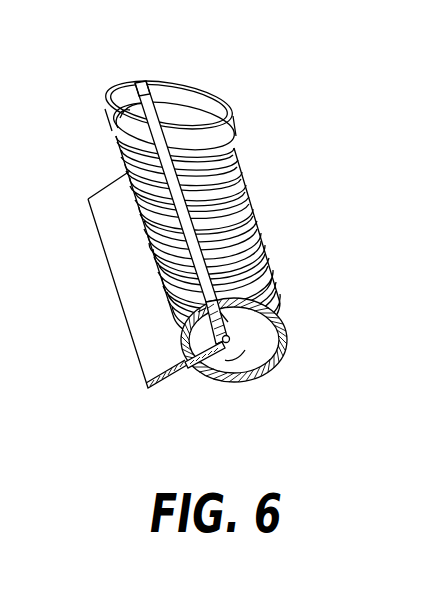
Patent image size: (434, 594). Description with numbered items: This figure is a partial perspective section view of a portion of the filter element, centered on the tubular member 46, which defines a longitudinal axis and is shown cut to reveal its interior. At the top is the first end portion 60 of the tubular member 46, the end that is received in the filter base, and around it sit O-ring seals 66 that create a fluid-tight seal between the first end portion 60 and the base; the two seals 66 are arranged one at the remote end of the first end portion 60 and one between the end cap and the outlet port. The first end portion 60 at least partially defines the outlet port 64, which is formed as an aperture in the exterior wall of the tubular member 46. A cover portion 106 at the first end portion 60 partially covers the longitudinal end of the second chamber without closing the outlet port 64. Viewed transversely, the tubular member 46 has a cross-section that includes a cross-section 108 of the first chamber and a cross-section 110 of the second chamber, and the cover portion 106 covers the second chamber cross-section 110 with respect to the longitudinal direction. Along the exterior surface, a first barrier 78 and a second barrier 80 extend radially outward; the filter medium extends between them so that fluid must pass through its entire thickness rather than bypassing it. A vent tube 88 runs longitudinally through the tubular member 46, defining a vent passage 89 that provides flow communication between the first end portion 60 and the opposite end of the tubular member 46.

The first end portion 60 is at (150, 78).
The tubular member 46 is at (257, 128).
The cover portion 106 is at (171, 151).
The first barrier 78 is at (158, 96).
The seals 66 is at (200, 90).
The outlet port 64 is at (122, 118).
The vent tube 88 is at (207, 323).
The second barrier 80 is at (148, 365).
The cross-section of first chamber 108 is at (258, 340).
The vent passage 89 is at (247, 362).
The cross-section of second chamber 110 is at (226, 344).